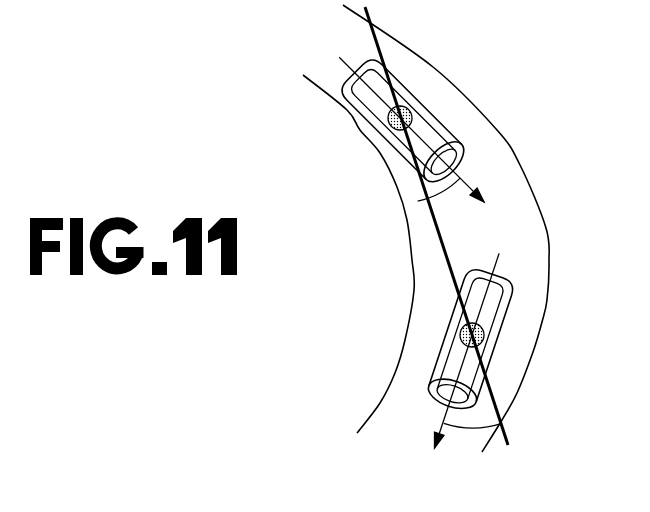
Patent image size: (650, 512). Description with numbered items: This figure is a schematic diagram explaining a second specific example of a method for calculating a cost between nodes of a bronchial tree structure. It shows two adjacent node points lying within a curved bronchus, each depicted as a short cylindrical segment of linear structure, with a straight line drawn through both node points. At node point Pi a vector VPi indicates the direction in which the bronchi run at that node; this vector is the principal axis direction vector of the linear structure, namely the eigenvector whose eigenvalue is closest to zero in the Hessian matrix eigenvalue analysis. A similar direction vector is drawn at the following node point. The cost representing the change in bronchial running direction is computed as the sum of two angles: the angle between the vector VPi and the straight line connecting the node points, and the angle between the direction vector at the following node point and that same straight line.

The node point Pi is at (406, 124).
The vector of the direction in which bronchi run at node point Pi VPi is at (427, 129).